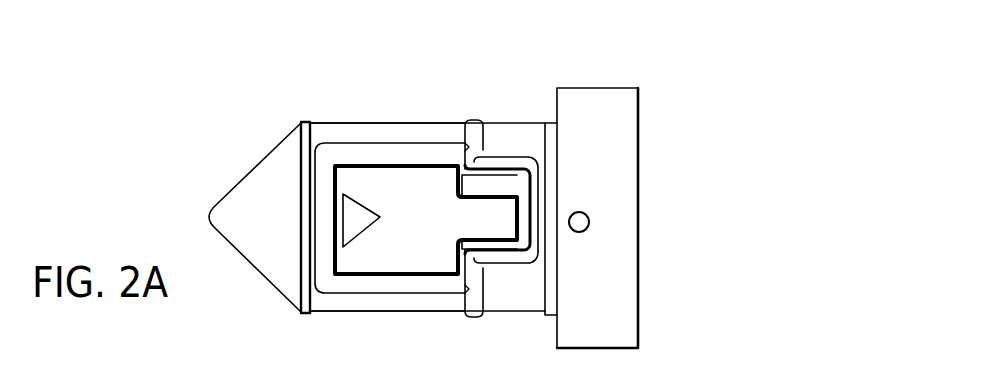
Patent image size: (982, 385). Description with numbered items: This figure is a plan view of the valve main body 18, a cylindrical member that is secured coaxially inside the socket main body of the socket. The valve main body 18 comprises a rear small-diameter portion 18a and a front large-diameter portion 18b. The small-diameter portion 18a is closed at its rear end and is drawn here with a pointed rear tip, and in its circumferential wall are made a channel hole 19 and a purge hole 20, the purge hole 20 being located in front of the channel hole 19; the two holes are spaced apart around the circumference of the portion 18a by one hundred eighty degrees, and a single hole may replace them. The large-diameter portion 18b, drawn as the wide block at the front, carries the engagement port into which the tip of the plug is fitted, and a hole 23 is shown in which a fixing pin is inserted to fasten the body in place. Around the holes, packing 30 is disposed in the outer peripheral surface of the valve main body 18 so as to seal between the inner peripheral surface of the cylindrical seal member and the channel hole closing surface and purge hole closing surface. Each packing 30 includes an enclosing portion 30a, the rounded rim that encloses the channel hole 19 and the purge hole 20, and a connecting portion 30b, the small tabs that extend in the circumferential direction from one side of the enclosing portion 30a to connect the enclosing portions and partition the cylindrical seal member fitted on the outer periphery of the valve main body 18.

The valve main body 18 is at (378, 90).
The small-diameter portion 18a is at (347, 132).
The large-diameter portion 18b is at (633, 118).
The channel hole 19 is at (396, 253).
The purge hole 20 is at (495, 236).
The hole 23 is at (590, 218).
The packing 30 is at (433, 144).
The enclosing portion 30a is at (392, 150).
The connecting portion 30b is at (473, 121).